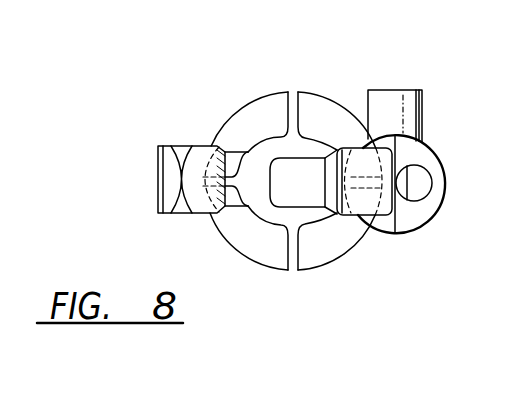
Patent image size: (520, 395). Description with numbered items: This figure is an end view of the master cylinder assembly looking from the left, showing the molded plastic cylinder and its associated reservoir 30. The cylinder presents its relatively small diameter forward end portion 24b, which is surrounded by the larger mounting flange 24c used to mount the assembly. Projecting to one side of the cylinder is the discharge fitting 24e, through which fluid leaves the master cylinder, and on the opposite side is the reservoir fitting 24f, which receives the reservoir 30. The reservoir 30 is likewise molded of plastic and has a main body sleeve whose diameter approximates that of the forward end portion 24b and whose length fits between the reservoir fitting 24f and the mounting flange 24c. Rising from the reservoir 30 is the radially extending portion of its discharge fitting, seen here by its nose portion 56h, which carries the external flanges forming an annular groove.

The forward end portion 24b is at (321, 135).
The mounting flange 24c is at (252, 104).
The discharge fitting 24e is at (170, 146).
The reservoir fitting 24f is at (355, 226).
The reservoir 30 is at (404, 240).
The nose portion 56h is at (403, 90).